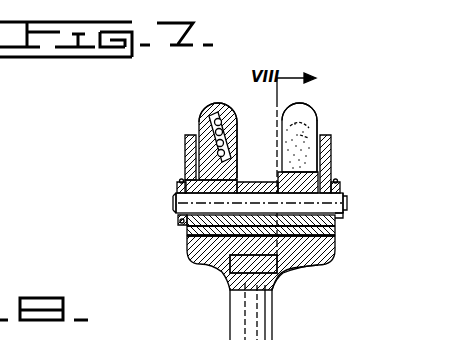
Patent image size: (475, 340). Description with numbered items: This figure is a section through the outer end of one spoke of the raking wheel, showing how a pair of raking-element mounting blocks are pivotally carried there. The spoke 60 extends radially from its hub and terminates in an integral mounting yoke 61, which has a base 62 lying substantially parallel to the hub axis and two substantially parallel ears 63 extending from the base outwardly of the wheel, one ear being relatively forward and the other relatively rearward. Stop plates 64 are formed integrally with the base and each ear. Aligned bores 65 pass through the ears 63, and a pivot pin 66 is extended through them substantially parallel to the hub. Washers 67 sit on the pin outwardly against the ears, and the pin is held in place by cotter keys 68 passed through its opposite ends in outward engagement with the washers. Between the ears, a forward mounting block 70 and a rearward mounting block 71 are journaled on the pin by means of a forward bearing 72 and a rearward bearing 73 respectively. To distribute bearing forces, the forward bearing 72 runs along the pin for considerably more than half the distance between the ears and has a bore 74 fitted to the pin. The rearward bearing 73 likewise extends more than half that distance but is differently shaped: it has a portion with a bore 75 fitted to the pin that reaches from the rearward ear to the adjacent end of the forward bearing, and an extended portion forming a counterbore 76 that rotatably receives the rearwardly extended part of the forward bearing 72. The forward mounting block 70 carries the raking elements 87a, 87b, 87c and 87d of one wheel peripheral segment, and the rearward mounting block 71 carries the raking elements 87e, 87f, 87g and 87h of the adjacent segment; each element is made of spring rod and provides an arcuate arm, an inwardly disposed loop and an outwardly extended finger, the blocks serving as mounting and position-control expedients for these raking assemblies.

The spoke 60 is at (267, 318).
The mounting yoke 61 is at (313, 262).
The base 62 is at (278, 265).
The ears 63 is at (184, 147).
The stop plates 64 is at (277, 171).
The bores 65 is at (326, 198).
The pivot pin 66 is at (343, 205).
The washers 67 is at (182, 226).
The cotter keys 68 is at (178, 184).
The forward mounting block 70 is at (225, 96).
The rearward mounting block 71 is at (300, 106).
The forward bearing 72 is at (248, 183).
The rearward bearing 73 is at (337, 250).
The bore 74 is at (187, 237).
The bore 75 is at (343, 216).
The counterbore 76 is at (235, 256).
The raking element 87a is at (236, 152).
The raking element 87b is at (235, 126).
The raking element 87c is at (215, 127).
The raking element 87d is at (213, 107).
The raking element 87e is at (319, 150).
The raking element 87f is at (311, 136).
The raking element 87g is at (308, 120).
The raking element 87h is at (307, 110).